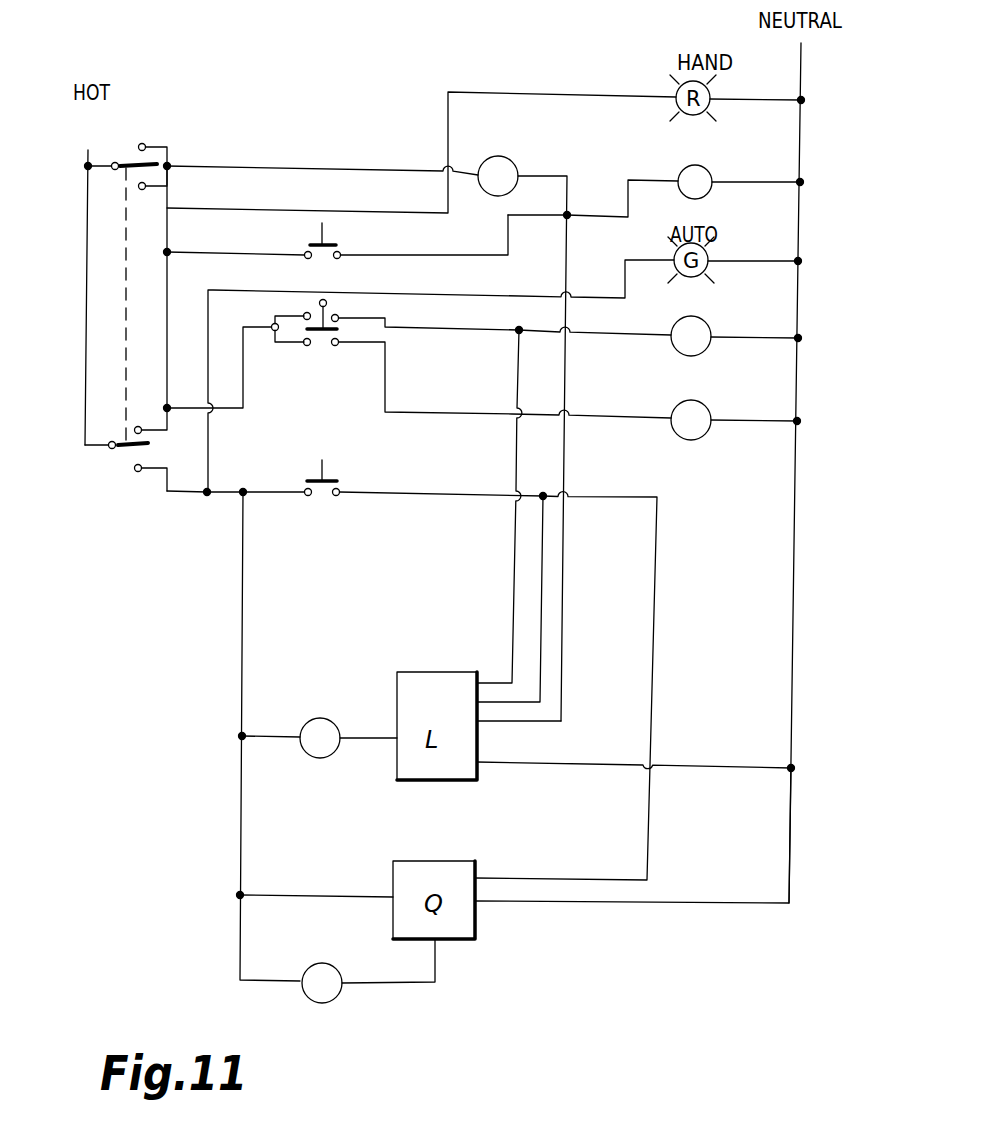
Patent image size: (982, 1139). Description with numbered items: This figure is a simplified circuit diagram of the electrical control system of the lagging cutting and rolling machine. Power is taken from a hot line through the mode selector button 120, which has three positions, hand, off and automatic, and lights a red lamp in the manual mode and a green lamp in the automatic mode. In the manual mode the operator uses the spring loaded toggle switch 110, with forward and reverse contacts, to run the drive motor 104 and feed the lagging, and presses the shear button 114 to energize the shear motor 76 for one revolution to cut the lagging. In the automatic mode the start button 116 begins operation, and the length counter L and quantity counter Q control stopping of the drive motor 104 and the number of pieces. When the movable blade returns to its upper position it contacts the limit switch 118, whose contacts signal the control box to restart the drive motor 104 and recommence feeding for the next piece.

The shear motor 76 is at (700, 169).
The drive motor 104 is at (712, 369).
The toggle switch 110 is at (318, 308).
The shear button 114 is at (320, 240).
The start button 116 is at (333, 470).
The limit switch 118 is at (409, 579).
The mode selector button 120 is at (128, 456).